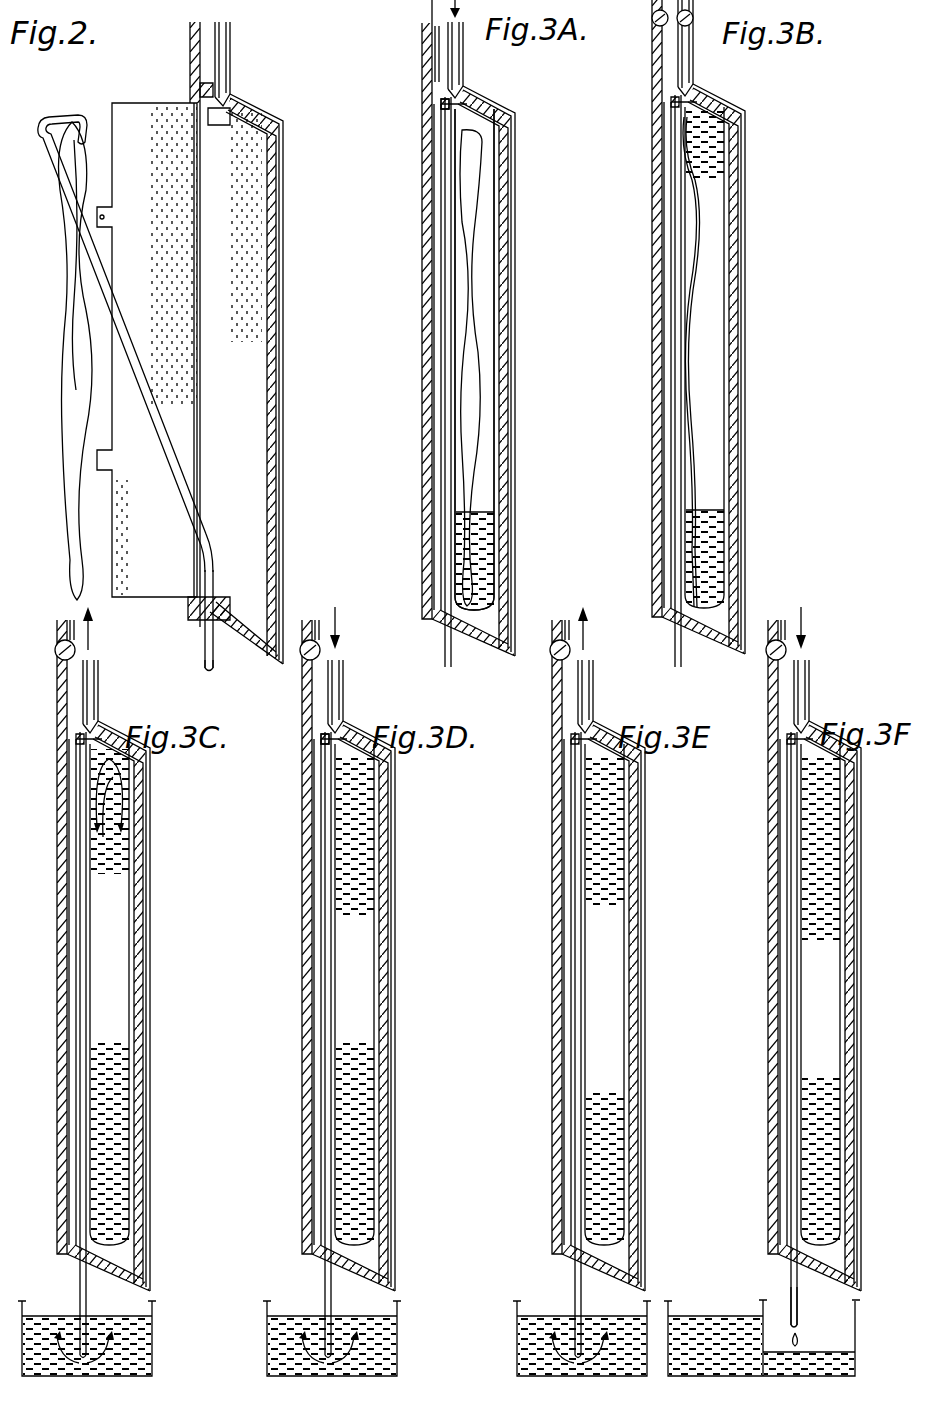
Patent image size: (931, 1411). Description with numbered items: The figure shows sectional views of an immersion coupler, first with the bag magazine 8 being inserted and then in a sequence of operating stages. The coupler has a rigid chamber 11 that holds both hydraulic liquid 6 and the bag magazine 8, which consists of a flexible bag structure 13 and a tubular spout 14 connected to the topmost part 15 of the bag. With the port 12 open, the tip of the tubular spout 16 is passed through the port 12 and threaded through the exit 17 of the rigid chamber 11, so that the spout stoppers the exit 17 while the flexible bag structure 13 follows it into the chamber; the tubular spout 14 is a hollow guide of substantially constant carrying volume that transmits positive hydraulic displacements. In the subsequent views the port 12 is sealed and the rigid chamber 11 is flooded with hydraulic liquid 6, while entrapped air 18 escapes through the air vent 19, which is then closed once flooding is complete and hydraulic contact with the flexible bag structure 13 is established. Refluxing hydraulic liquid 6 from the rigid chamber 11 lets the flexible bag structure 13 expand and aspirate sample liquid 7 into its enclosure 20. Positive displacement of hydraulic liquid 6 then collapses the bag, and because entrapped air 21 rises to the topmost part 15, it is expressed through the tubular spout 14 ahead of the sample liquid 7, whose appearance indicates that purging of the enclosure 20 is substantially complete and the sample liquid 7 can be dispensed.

In FIG. 3A, the hydraulic liquid 6 is at (508, 560).
In FIG. 3B, the hydraulic liquid 6 is at (658, 497).
In FIG. 3C, the sample liquid 7 is at (140, 1102).
In FIG. 3D, the sample liquid 7 is at (313, 1038).
In FIG. 3E, the sample liquid 7 is at (559, 1038).
In FIG. 2, the bag magazine 8 is at (57, 361).
In FIG. 3A, the bag magazine 8 is at (427, 368).
In FIG. 3B, the bag magazine 8 is at (732, 362).
In FIG. 2, the rigid chamber 11 is at (272, 379).
In FIG. 2, the port 12 is at (147, 325).
In FIG. 2, the flexible bag structure 13 is at (48, 265).
In FIG. 2, the tubular spout 14 is at (170, 620).
In FIG. 3F, the tubular spout 14 is at (754, 1029).
In FIG. 2, the topmost part of the flexible bag structure 15 is at (124, 316).
In FIG. 3A, the topmost part of the flexible bag structure 15 is at (410, 114).
In FIG. 3D, the topmost part of the flexible bag structure 15 is at (285, 746).
In FIG. 2, the tip of the tubular spout 16 is at (230, 680).
In FIG. 3F, the tip of the tubular spout 16 is at (842, 1316).
In FIG. 2, the exit 17 is at (179, 619).
In FIG. 3A, the entrapped air 18 is at (514, 359).
In FIG. 3A, the air vent 19 is at (404, 41).
In FIG. 3C, the enclosure 20 is at (144, 826).
In FIG. 3C, the entrapped air 21 is at (145, 798).